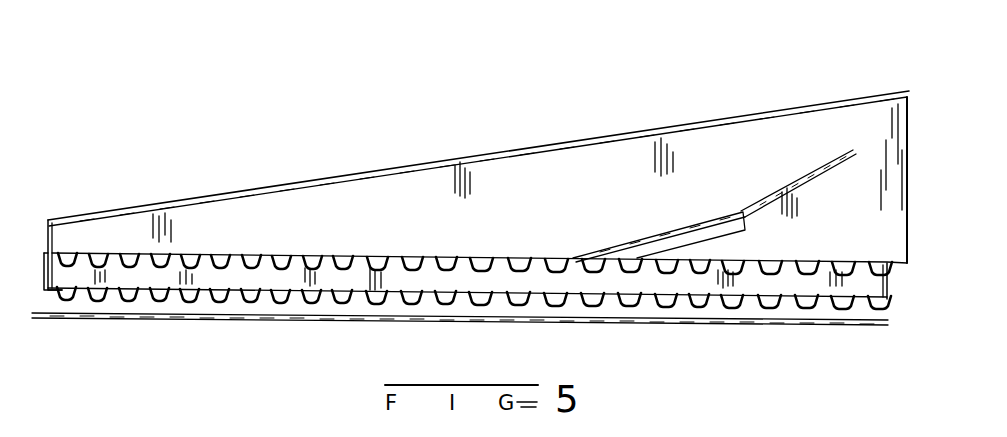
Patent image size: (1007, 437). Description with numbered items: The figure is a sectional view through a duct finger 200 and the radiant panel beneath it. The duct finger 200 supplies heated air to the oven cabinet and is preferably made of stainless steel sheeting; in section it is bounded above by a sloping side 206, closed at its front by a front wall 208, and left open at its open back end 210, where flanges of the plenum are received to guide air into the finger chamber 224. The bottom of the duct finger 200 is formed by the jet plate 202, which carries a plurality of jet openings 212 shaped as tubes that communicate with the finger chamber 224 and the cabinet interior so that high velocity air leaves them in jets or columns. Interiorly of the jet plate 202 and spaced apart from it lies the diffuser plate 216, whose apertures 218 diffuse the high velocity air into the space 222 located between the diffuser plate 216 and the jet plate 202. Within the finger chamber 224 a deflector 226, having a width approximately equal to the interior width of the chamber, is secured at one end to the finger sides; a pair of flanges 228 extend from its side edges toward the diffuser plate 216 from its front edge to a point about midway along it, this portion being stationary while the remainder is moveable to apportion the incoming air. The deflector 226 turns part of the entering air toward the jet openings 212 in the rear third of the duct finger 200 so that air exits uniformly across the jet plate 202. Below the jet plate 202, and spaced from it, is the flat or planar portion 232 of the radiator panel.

The duct finger 200 is at (607, 107).
The jet plate 202 is at (647, 308).
The sloping side 206 is at (461, 158).
The front wall 208 is at (45, 240).
The open back end 210 is at (907, 110).
The jet opening 212 is at (610, 306).
The diffuser plate 216 is at (477, 258).
The aperture 218 is at (220, 258).
The space 222 is at (178, 277).
The finger chamber 224 is at (449, 223).
The deflector 226 is at (718, 222).
The flange 228 is at (670, 244).
The flat or planar portion 232 is at (320, 323).